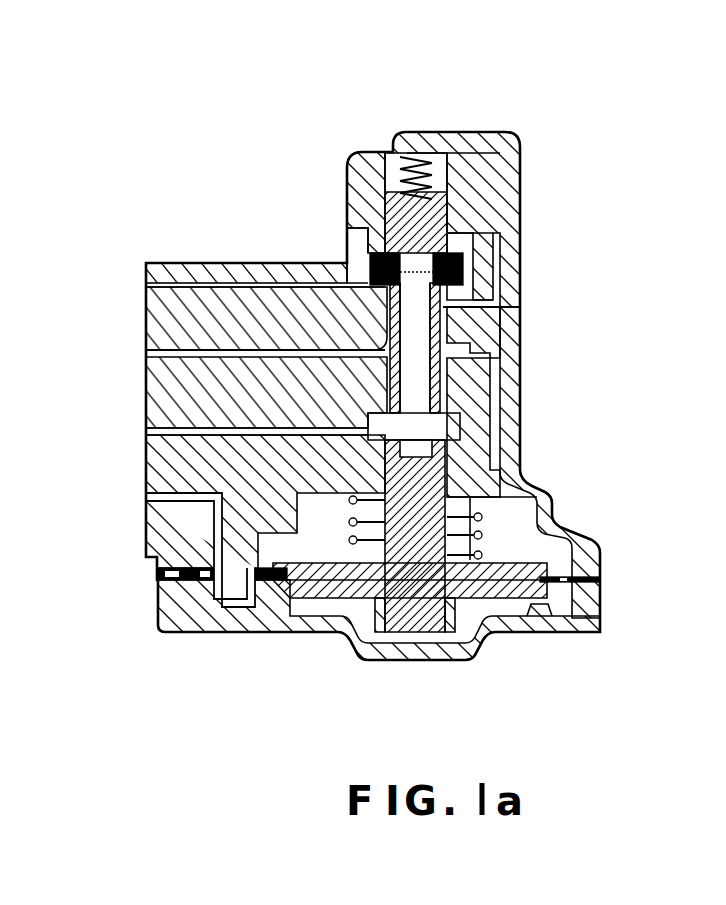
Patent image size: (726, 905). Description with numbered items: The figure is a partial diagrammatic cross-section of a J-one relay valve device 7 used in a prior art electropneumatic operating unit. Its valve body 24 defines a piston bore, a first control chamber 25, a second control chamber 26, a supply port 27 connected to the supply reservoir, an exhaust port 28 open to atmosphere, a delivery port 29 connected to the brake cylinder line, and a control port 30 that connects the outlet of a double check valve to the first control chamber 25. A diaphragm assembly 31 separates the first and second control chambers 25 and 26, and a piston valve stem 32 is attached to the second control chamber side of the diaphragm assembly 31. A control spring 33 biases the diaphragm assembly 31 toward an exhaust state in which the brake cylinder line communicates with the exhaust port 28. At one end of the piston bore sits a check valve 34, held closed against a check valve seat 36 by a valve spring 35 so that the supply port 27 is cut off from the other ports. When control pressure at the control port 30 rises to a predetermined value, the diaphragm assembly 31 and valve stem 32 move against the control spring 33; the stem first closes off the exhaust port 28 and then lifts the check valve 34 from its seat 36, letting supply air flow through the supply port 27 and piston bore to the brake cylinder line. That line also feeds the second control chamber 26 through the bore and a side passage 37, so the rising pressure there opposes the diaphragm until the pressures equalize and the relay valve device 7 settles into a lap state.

The relay valve device 7 is at (365, 362).
The valve body 24 is at (522, 350).
The first control chamber 25 is at (460, 620).
The second control chamber 26 is at (520, 527).
The supply port 27 is at (146, 283).
The exhaust port 28 is at (146, 432).
The delivery port 29 is at (146, 352).
The control port 30 is at (146, 496).
The diaphragm assembly 31 is at (270, 573).
The piston valve stem 32 is at (440, 462).
The control spring 33 is at (482, 514).
The check valve 34 is at (463, 270).
The valve spring 35 is at (385, 175).
The check valve seat 36 is at (497, 304).
The side passage 37 is at (492, 398).